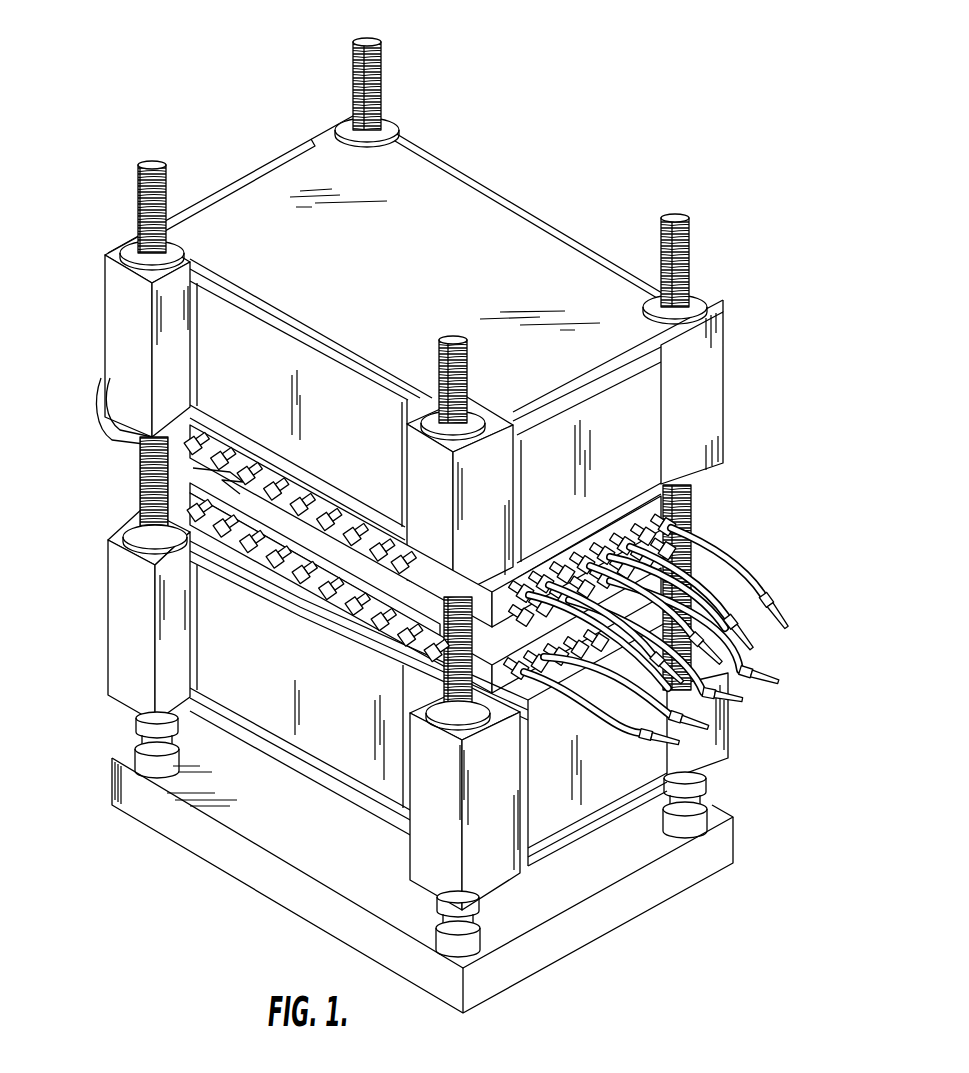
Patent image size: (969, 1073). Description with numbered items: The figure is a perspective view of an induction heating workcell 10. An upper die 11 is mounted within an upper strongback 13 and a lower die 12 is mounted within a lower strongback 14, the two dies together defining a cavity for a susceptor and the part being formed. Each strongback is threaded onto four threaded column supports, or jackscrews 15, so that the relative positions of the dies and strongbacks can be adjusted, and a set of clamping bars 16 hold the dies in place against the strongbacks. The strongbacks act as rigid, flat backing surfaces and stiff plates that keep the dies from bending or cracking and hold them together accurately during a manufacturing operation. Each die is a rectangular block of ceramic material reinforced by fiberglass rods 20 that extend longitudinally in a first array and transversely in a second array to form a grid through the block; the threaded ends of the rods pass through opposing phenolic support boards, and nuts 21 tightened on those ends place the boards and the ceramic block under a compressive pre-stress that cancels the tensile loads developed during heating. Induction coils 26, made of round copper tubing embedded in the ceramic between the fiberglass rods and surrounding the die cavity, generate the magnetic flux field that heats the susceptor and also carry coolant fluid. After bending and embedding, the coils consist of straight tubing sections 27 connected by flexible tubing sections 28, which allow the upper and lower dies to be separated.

The induction heating workcell 10 is at (716, 110).
The upper die 11 is at (371, 502).
The lower die 12 is at (277, 680).
The upper strongback 13 is at (760, 368).
The lower strongback 14 is at (780, 745).
The jackscrews 15 is at (697, 178).
The clamping bars 16 is at (253, 558).
The fiberglass rods 20 is at (745, 497).
The nuts 21 is at (600, 540).
The induction coils 26 is at (679, 623).
The straight tubing sections 27 is at (670, 579).
The flexible tubing sections 28 is at (802, 586).